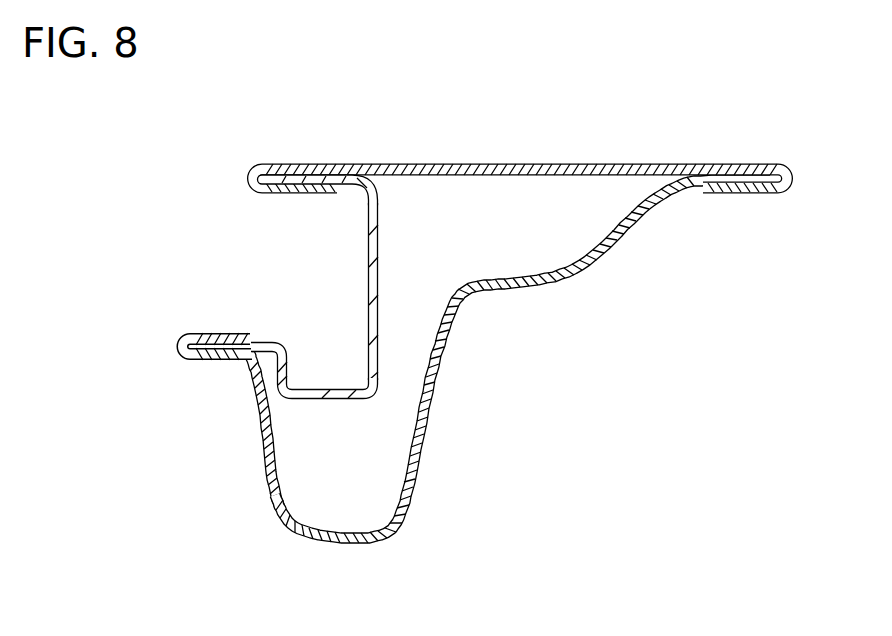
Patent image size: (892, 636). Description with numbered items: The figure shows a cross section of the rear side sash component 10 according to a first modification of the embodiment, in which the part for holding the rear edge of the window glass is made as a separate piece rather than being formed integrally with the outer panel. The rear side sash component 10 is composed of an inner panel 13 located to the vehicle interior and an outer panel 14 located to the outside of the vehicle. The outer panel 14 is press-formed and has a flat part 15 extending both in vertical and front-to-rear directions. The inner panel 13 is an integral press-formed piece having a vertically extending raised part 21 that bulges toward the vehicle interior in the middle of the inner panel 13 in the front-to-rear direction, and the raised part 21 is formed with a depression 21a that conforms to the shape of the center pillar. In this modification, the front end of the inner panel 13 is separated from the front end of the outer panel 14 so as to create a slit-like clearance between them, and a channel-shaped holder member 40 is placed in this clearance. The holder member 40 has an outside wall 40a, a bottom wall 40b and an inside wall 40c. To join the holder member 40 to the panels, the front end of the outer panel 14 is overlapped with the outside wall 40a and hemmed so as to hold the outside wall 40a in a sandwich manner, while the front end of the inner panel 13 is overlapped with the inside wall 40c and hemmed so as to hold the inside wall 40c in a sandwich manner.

The rear side sash component 10 is at (235, 132).
The inner panel 13 is at (263, 478).
The outer panel 14 is at (520, 134).
The flat part 15 is at (585, 165).
The raised part 21 is at (522, 400).
The depression 21a is at (472, 291).
The holder member 40 is at (278, 287).
The outside wall 40a is at (345, 188).
The bottom wall 40b is at (367, 243).
The inside wall 40c is at (333, 392).